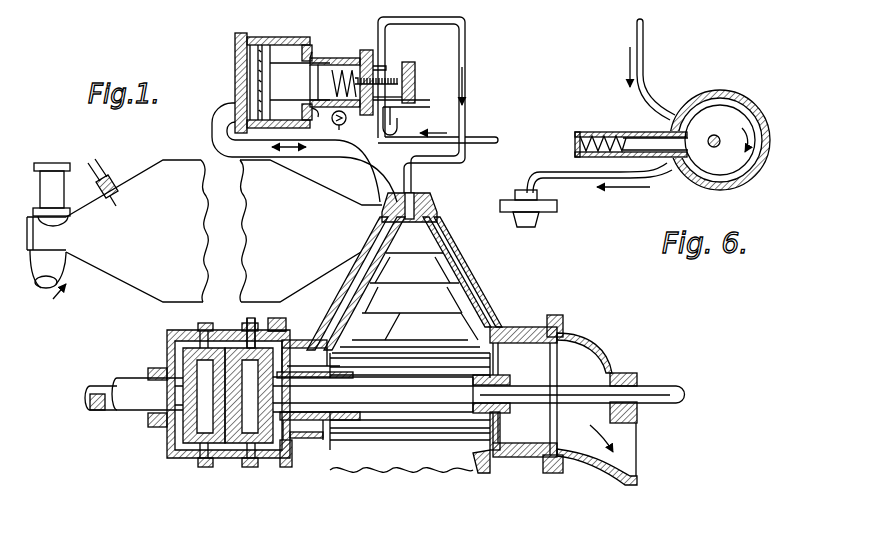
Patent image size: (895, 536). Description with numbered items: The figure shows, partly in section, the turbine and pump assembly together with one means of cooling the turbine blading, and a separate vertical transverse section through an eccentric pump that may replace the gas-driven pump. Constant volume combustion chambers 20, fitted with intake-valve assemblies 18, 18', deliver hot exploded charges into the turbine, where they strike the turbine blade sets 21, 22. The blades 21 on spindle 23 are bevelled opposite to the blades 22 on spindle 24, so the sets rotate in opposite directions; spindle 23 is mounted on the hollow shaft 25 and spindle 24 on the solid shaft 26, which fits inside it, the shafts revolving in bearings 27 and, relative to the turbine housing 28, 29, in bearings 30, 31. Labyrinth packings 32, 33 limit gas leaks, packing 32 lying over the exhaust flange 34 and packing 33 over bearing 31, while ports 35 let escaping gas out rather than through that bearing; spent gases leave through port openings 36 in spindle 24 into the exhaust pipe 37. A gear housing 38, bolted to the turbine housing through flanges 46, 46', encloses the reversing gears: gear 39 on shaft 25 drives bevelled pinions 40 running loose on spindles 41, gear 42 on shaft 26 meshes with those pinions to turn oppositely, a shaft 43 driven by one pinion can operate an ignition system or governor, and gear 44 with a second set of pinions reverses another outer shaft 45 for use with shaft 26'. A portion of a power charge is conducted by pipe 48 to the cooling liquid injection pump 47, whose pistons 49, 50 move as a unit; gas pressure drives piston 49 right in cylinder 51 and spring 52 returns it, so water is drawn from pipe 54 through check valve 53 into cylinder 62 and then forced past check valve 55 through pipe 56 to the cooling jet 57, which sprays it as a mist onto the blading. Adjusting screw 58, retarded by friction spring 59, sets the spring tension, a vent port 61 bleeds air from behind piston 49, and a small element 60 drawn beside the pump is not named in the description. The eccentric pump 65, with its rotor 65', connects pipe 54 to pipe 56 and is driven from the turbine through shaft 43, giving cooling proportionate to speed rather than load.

In FIG. 1, the chamber intake-valve assembly 18 is at (92, 172).
In FIG. 1, the chamber intake-valve assembly 18' is at (60, 194).
In FIG. 1, the constant volume combustion chamber 20 is at (167, 163).
In FIG. 1, the turbine blade set 21 is at (426, 287).
In FIG. 1, the turbine blade set 22 is at (410, 302).
In FIG. 1, the spindle 23 is at (375, 240).
In FIG. 1, the spindle 24 is at (462, 262).
In FIG. 1, the hollow shaft 25 is at (386, 410).
In FIG. 1, the solid shaft 26 is at (579, 398).
In FIG. 1, the shaft 26' is at (95, 384).
In FIG. 1, the bearing 27 is at (240, 450).
In FIG. 1, the turbine housing 28 is at (361, 256).
In FIG. 1, the turbine housing 29 is at (478, 272).
In FIG. 1, the bearing 30 is at (635, 373).
In FIG. 1, the bearing 31 is at (330, 398).
In FIG. 1, the labyrinth packing 32 is at (555, 315).
In FIG. 1, the labyrinth packing 33 is at (308, 340).
In FIG. 1, the exhaust flange 34 is at (515, 327).
In FIG. 1, the port 35 is at (286, 467).
In FIG. 1, the port opening 36 is at (500, 360).
In FIG. 1, the exhaust pipe 37 is at (604, 352).
In FIG. 1, the gear housing 38 is at (167, 340).
In FIG. 1, the gear 39 is at (275, 400).
In FIG. 1, the bevelled pinion 40 is at (205, 345).
In FIG. 1, the spindle 41 is at (175, 340).
In FIG. 1, the gear 42 is at (175, 455).
In FIG. 1, the shaft 43 is at (250, 318).
In FIG. 6, the shaft 43 is at (718, 146).
In FIG. 1, the gear 44 is at (190, 425).
In FIG. 1, the outer shaft 45 is at (133, 378).
In FIG. 1, the flange 46 is at (289, 313).
In FIG. 1, the flange 46' is at (282, 295).
In FIG. 1, the cooling liquid injection pump 47 is at (292, 43).
In FIG. 1, the pipe 48 is at (212, 121).
In FIG. 1, the piston 49 is at (255, 45).
In FIG. 1, the piston 50 is at (332, 66).
In FIG. 1, the cylinder 51 is at (316, 57).
In FIG. 1, the spring 52 is at (364, 50).
In FIG. 1, the check valve 53 is at (400, 99).
In FIG. 1, the pipe 54 is at (485, 137).
In FIG. 6, the pipe 54 is at (644, 85).
In FIG. 1, the check valve 55 is at (386, 67).
In FIG. 1, the pipe 56 is at (466, 162).
In FIG. 6, the pipe 56 is at (575, 180).
In FIG. 1, the cooling jet 57 is at (420, 197).
In FIG. 6, the cooling jet 57 is at (538, 222).
In FIG. 1, the adjusting screw 58 is at (415, 78).
In FIG. 1, the friction spring 59 is at (413, 110).
In FIG. 1, the gauge 60 is at (346, 123).
In FIG. 1, the vent port 61 is at (321, 122).
In FIG. 1, the cylinder 62 is at (313, 52).
In FIG. 6, the eccentric pump 65 is at (672, 127).
In FIG. 6, the pump rotor 65' is at (686, 138).